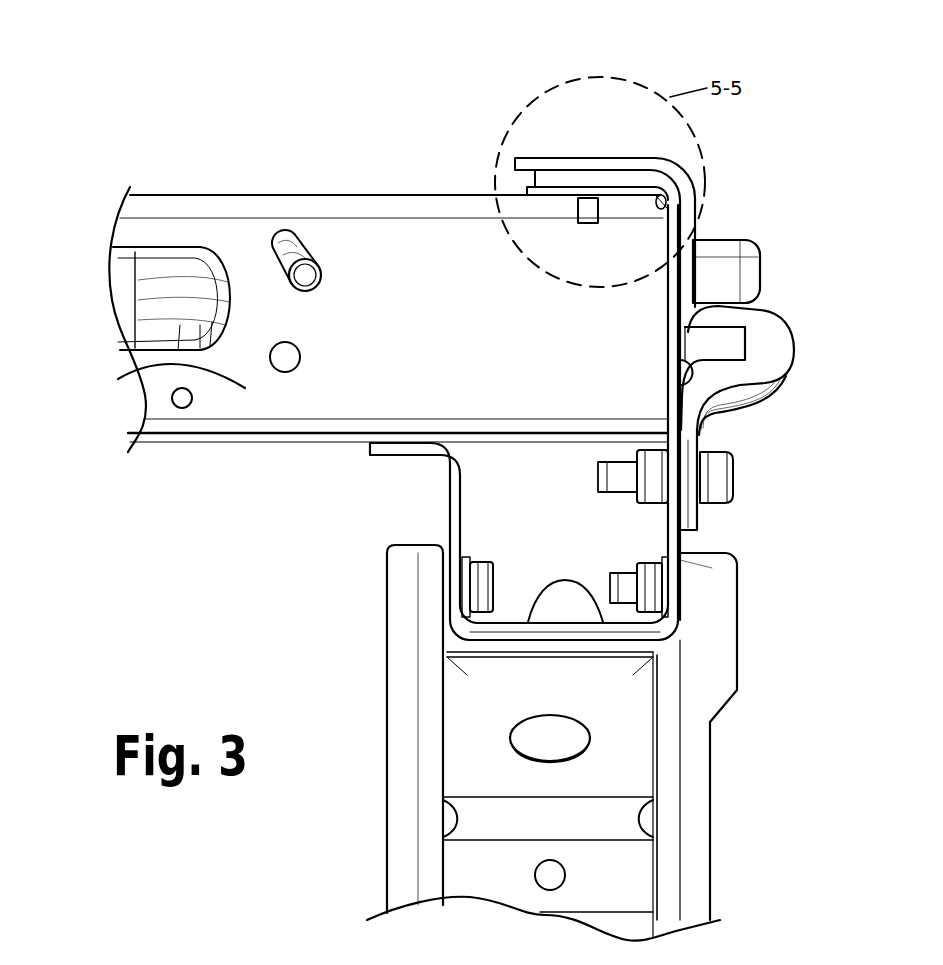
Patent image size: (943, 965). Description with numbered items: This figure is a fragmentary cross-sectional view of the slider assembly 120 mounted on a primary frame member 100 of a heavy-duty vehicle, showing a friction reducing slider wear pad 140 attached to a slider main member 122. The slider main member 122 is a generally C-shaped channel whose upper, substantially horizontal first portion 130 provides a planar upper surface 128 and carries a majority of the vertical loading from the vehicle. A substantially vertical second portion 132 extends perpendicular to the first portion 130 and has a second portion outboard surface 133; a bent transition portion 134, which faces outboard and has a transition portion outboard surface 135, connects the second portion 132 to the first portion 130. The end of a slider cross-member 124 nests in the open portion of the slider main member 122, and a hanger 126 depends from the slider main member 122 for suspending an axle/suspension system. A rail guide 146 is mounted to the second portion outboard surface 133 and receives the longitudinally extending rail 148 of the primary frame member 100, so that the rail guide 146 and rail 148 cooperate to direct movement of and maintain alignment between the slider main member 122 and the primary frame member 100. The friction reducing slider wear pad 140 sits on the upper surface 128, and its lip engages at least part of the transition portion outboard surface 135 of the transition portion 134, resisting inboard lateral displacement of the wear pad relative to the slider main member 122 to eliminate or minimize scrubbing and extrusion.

The primary frame member 100 is at (588, 163).
The slider assembly 120 is at (98, 330).
The slider main member 122 is at (680, 547).
The slider cross-member 124 is at (118, 379).
The hanger 126 is at (712, 772).
The upper surface 128 is at (557, 168).
The first portion 130 is at (650, 158).
The second portion 132 is at (675, 280).
The second portion outboard surface 133 is at (677, 390).
The transition portion 134 is at (663, 197).
The transition portion outboard surface 135 is at (637, 192).
The friction reducing slider wear pad 140 is at (532, 178).
The rail guide 146 is at (766, 383).
The rail 148 is at (707, 302).